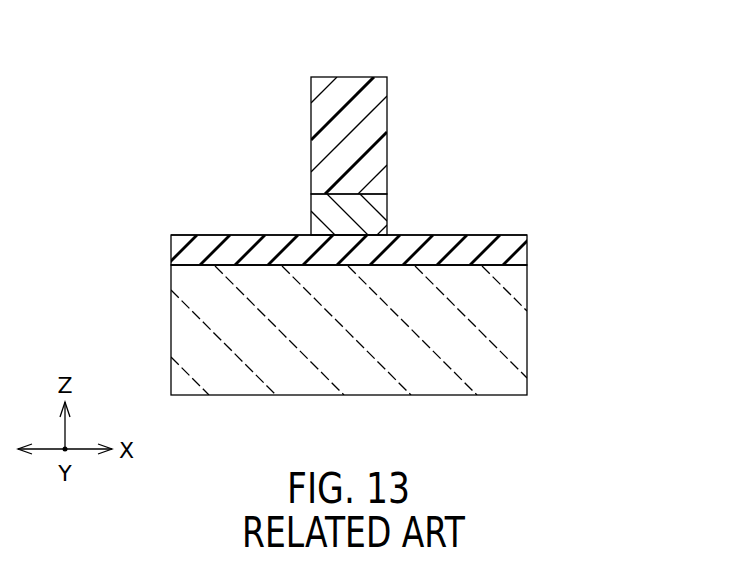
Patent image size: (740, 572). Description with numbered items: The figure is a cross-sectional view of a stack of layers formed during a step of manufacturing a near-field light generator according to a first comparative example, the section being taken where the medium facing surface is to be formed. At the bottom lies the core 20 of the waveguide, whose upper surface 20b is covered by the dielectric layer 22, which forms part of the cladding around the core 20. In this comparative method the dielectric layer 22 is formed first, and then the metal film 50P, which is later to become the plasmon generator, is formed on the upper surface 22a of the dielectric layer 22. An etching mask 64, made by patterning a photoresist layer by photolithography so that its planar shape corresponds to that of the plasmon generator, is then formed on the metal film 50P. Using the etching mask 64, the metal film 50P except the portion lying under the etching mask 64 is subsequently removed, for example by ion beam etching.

The core 20 is at (527, 314).
The upper surface of the core 20b is at (189, 264).
The dielectric layer 22 is at (524, 250).
The upper surface of the dielectric layer 22a is at (482, 235).
The metal film 50P is at (387, 216).
The etching mask 64 is at (345, 77).